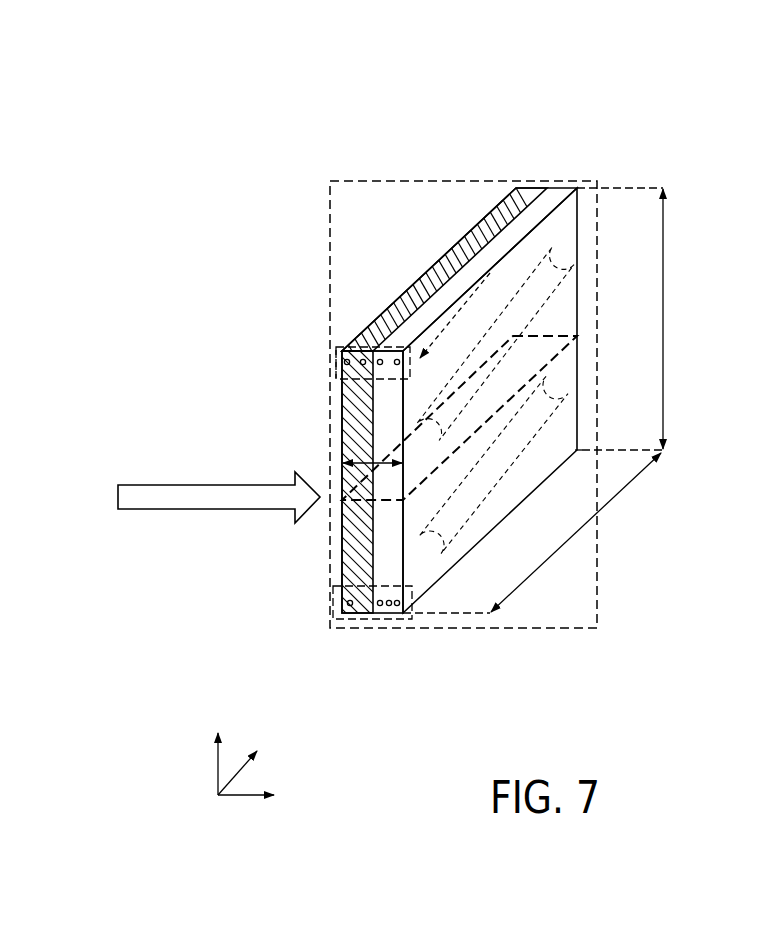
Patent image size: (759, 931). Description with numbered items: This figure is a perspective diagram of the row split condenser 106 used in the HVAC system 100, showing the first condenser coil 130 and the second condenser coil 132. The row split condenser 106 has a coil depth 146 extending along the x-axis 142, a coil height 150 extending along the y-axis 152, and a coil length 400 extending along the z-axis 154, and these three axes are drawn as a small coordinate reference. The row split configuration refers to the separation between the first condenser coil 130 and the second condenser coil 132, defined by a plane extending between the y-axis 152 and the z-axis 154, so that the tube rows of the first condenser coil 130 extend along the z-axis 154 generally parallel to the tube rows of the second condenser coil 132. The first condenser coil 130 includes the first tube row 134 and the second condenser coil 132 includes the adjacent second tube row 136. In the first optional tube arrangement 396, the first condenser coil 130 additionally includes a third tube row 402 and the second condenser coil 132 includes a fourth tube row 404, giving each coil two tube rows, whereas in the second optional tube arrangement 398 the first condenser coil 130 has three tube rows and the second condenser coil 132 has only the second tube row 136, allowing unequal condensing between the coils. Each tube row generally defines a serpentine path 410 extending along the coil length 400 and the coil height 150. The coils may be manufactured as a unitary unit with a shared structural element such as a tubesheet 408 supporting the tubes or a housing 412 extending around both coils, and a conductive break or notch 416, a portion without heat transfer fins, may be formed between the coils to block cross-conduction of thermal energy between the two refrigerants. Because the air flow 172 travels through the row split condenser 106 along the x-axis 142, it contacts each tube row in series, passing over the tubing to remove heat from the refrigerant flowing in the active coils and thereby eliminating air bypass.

The HVAC system 100 is at (542, 58).
The row split condenser 106 is at (582, 122).
The first condenser coil 130 is at (562, 167).
The second condenser coil 132 is at (480, 170).
The first tube row 134 is at (363, 359).
The second tube row 136 is at (347, 358).
The x-axis 142 is at (255, 790).
The coil depth 146 is at (352, 438).
The coil height 150 is at (665, 258).
The y-axis 152 is at (217, 762).
The z-axis 154 is at (240, 762).
The air flow 172 is at (170, 485).
The first optional tube arrangement 396 is at (333, 361).
The second optional tube arrangement 398 is at (401, 615).
The coil length 400 is at (625, 492).
The third tube row 402 is at (408, 346).
The fourth tube row 404 is at (338, 349).
The tubesheet 408 is at (535, 376).
The serpentine path 410 is at (557, 280).
The housing 412 is at (347, 180).
The notch 416 is at (487, 213).